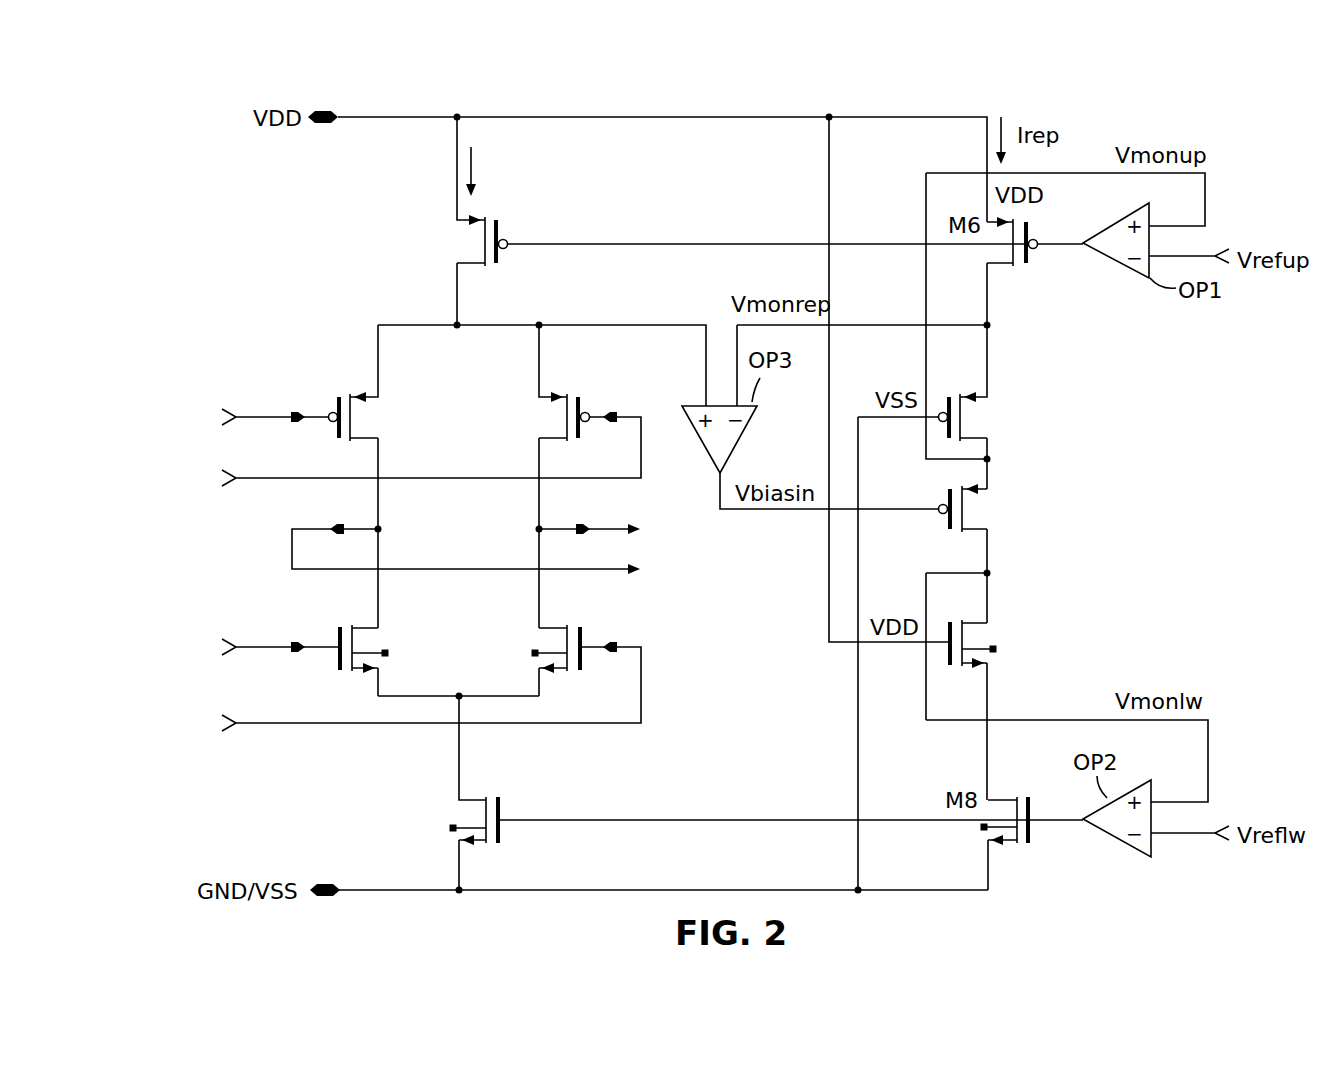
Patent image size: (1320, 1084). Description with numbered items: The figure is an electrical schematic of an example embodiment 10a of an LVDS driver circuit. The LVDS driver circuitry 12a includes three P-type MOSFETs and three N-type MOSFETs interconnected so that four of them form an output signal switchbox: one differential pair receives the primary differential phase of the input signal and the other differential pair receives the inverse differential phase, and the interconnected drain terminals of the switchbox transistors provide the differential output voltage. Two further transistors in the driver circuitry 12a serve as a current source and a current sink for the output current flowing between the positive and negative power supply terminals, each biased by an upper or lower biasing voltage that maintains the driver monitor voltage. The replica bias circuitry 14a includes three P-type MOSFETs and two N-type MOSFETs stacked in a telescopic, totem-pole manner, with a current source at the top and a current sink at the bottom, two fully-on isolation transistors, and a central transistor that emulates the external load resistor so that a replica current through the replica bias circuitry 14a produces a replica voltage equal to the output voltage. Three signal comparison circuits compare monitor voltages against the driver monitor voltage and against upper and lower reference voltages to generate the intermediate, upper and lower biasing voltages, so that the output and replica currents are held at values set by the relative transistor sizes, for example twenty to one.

The circuit 10a is at (280, 802).
The LVDS driver circuitry 12a is at (476, 386).
The replica bias circuitry 14a is at (846, 706).